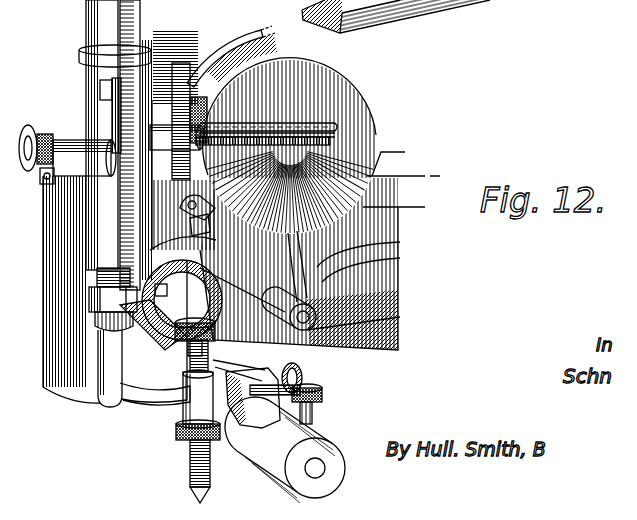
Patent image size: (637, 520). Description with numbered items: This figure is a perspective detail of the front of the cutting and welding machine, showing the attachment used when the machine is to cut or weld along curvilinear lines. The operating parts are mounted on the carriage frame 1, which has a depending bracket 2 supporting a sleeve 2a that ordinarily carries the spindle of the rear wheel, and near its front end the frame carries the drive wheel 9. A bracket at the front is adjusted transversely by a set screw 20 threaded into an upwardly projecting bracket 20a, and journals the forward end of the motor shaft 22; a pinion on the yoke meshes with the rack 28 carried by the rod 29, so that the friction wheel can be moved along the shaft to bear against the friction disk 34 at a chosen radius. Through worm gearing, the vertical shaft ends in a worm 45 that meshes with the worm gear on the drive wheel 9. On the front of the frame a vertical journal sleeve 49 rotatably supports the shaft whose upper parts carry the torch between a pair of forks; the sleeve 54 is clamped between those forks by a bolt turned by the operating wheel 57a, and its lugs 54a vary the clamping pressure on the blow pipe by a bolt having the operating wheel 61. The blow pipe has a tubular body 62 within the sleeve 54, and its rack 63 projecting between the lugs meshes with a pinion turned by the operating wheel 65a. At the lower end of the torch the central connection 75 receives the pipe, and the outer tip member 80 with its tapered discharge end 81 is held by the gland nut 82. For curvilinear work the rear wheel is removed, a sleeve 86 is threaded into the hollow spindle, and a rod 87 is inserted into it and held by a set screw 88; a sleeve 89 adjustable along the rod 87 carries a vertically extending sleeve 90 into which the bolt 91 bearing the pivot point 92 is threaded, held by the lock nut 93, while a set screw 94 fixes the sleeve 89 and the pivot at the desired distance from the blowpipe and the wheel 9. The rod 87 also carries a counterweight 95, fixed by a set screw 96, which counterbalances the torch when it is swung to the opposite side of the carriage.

The carriage frame 1 is at (304, 145).
The depending bracket 2 is at (380, 283).
The sleeve 2a is at (368, 353).
The wheel 9 is at (140, 393).
The set screw 20 is at (222, 204).
The upwardly projecting bracket 20a is at (215, 224).
The motor shaft 22 is at (257, 126).
The rack 28 is at (318, 141).
The rod 29 is at (288, 133).
The friction disk 34 is at (215, 60).
The worm 45 is at (318, 352).
The vertical journal sleeve 49 is at (73, 133).
The sleeve 54 is at (80, 56).
The lugs 54a is at (117, 100).
The operating wheel 57a is at (192, 94).
The operating wheel 61 is at (43, 177).
The tubular body 62 is at (91, 18).
The rack 63 is at (139, 26).
The operating wheel 65a is at (200, 126).
The central connection 75 is at (96, 277).
The outer tip member 80 is at (118, 337).
The tapered discharge end 81 is at (104, 398).
The gland nut 82 is at (100, 299).
The sleeve 86 is at (150, 332).
The rod 87 is at (188, 364).
The set screw 88 is at (100, 320).
The sleeve 89 is at (248, 377).
The vertically extending sleeve 90 is at (200, 402).
The bolt 91 is at (194, 458).
The pivot point 92 is at (194, 491).
The lock nut 93 is at (186, 433).
The set screw 94 is at (302, 380).
The counterweight 95 is at (272, 441).
The set screw 96 is at (318, 409).